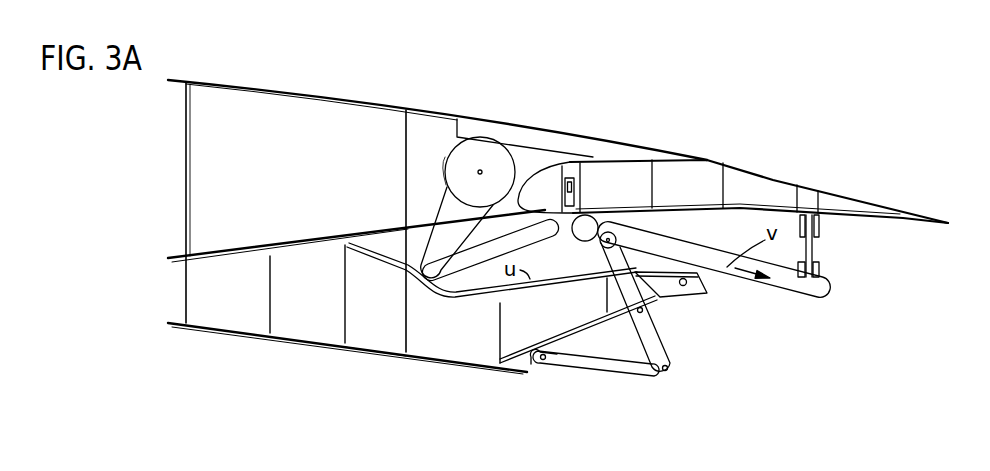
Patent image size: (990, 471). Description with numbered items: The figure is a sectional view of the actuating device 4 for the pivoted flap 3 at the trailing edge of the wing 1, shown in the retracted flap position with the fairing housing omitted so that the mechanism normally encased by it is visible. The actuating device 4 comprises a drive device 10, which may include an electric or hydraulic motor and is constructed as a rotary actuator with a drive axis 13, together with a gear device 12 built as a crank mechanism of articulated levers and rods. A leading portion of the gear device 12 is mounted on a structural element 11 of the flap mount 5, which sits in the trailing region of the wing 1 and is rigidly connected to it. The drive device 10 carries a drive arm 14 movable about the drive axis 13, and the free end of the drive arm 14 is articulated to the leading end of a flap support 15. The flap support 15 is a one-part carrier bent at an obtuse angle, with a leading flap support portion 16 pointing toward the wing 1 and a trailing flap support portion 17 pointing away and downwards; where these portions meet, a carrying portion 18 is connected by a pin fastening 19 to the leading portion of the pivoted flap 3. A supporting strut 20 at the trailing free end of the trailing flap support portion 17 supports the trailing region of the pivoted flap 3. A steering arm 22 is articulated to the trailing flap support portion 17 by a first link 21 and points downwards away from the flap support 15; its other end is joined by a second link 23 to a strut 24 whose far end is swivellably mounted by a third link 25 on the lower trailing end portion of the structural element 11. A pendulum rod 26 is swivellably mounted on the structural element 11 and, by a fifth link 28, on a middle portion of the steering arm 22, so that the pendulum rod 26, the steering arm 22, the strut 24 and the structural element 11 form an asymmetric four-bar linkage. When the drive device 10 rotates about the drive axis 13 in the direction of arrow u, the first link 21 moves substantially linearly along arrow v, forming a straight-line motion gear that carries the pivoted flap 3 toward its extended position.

The wing 1 is at (298, 90).
The pivoted flap 3 is at (768, 173).
The actuating device 4 is at (735, 345).
The flap mount 5 is at (265, 348).
The drive device 10 is at (445, 157).
The structural element 11 is at (382, 353).
The gear device 12 is at (611, 386).
The drive axis 13 is at (482, 170).
The drive arm 14 is at (453, 210).
The flap support 15 is at (740, 294).
The leading flap support portion 16 is at (485, 267).
The trailing flap support portion 17 is at (690, 238).
The carrying portion 18 is at (574, 218).
The pin fastening 19 is at (570, 196).
The supporting strut 20 is at (813, 248).
The first link 21 is at (612, 232).
The steering arm 22 is at (652, 337).
The second link 23 is at (670, 367).
The strut 24 is at (638, 372).
The third link 25 is at (545, 360).
The pendulum rod 26 is at (662, 298).
The fifth link 28 is at (640, 312).